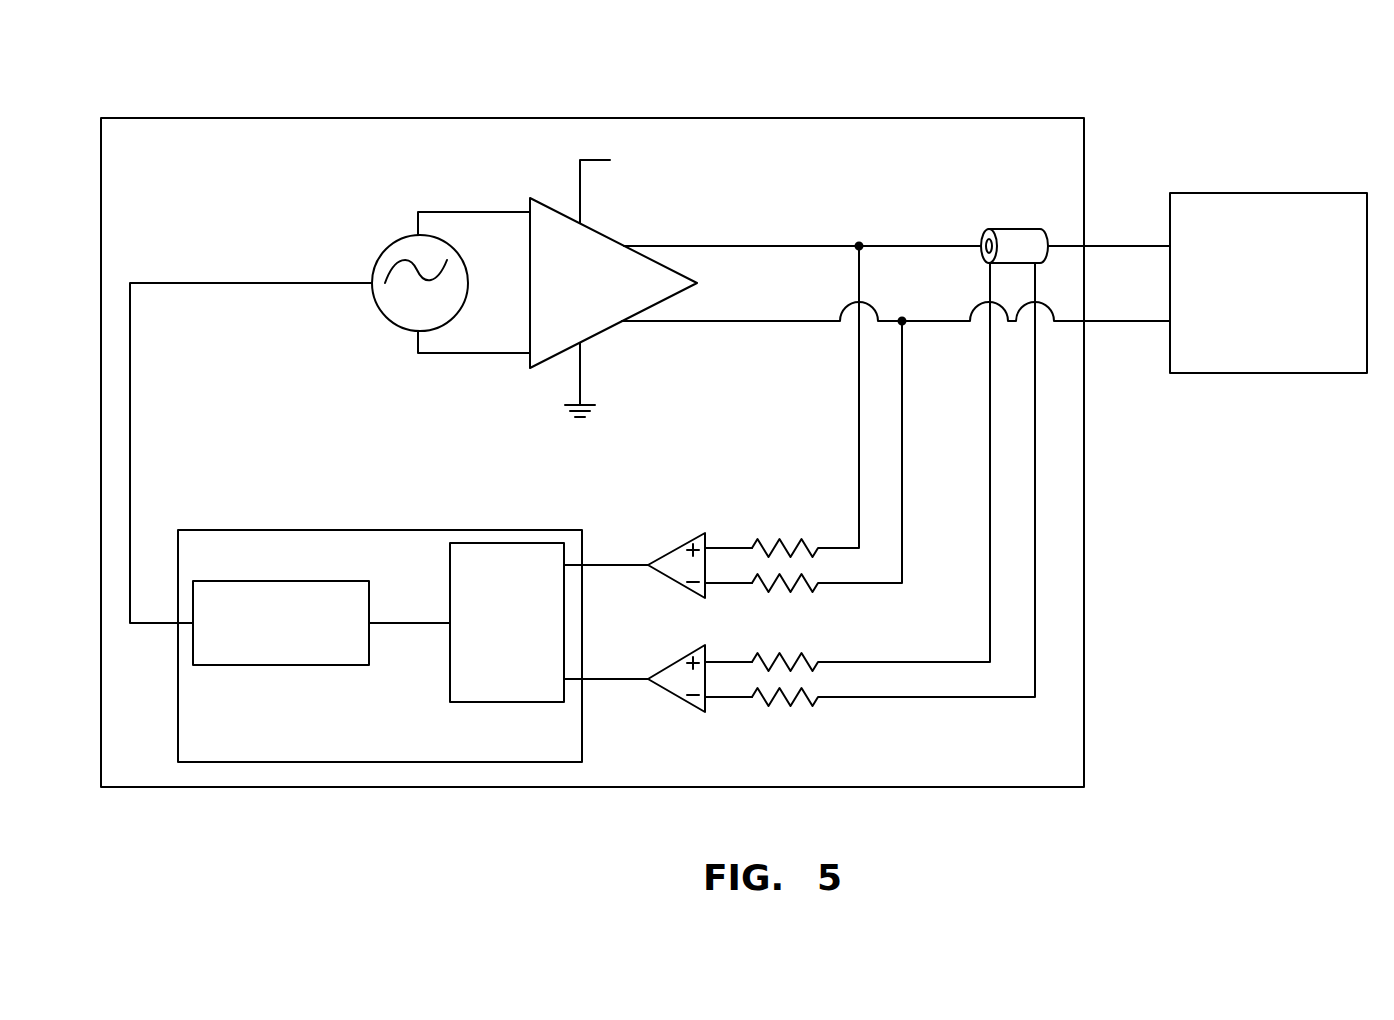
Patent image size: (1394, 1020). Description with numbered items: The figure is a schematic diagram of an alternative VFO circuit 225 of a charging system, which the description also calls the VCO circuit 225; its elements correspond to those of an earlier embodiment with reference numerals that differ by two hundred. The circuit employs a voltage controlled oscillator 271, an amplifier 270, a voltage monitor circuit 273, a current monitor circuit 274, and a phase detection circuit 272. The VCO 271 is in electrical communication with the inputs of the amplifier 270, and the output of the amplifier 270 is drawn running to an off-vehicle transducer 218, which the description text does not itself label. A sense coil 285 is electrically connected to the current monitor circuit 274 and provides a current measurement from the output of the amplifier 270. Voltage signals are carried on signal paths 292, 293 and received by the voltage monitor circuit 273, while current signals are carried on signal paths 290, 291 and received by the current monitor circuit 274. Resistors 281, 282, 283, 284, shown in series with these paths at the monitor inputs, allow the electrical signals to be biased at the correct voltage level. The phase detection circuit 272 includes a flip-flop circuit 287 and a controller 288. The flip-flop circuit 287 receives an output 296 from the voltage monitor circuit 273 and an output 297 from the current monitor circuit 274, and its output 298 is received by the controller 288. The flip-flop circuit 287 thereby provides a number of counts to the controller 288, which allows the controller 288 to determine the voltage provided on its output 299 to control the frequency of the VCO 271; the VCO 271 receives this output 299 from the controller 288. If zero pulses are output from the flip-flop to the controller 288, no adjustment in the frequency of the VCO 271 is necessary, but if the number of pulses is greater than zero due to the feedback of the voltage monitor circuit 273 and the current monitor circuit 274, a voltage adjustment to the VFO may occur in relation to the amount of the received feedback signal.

The VFO circuit 225 is at (993, 118).
The off-vehicle transducer 218 is at (1275, 193).
The sense coil 285 is at (1028, 229).
The amplifier 270 is at (603, 232).
The voltage controlled oscillator 271 is at (398, 246).
The output 299 is at (131, 450).
The controller 288 is at (253, 581).
The output 298 is at (393, 623).
The flip-flop circuit 287 is at (497, 543).
The phase detection circuit 272 is at (280, 762).
The output 296 is at (610, 565).
The voltage monitor circuit 273 is at (680, 540).
The resistor 281 is at (785, 540).
The resistor 282 is at (772, 590).
The resistor 283 is at (795, 655).
The resistor 284 is at (810, 702).
The signal path 292 is at (859, 478).
The signal path 293 is at (903, 478).
The signal path 290 is at (990, 480).
The signal path 291 is at (1036, 472).
The output 297 is at (622, 690).
The current monitor circuit 274 is at (688, 692).